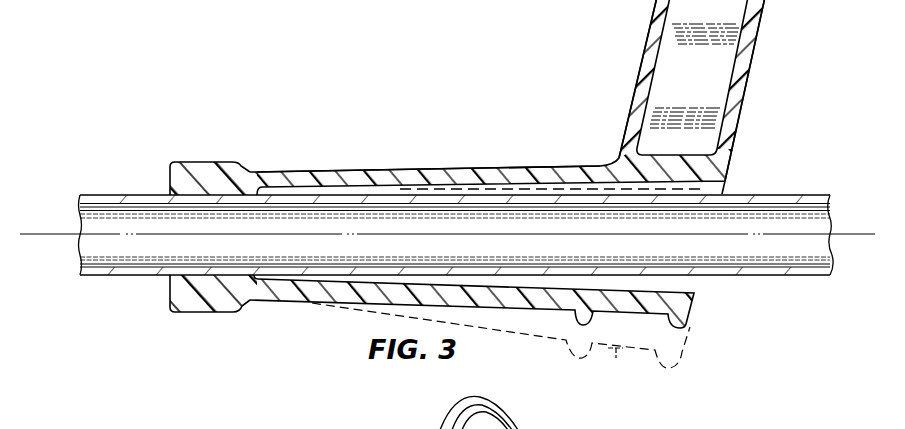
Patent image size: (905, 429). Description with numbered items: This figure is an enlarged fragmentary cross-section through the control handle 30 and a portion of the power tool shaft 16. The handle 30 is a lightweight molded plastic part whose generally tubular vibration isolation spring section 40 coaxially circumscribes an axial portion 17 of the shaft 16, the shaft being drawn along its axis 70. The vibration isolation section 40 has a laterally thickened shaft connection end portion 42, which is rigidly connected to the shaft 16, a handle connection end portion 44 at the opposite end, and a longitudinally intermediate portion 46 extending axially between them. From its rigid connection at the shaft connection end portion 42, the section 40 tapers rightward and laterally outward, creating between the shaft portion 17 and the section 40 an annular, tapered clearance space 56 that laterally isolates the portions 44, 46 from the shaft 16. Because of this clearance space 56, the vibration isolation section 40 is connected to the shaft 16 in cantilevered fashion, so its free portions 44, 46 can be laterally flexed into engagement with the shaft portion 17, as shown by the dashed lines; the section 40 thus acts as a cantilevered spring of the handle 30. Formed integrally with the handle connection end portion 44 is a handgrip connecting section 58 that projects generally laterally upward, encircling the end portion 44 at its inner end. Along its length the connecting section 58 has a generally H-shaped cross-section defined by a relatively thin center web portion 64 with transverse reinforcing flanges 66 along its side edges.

The shaft 16 is at (778, 282).
The axial portion of the shaft 17 is at (428, 264).
The handle 30 is at (515, 108).
The vibration isolation spring section 40 is at (419, 162).
The shaft connection end portion 42 is at (200, 162).
The handle connection end portion 44 is at (614, 322).
The longitudinally intermediate portion 46 is at (473, 166).
The annular tapered clearance space 56 is at (569, 183).
The handgrip connecting section 58 is at (763, 61).
The center web portion 64 is at (666, 46).
The transverse reinforcing flanges 66 is at (648, 62).
The axis of the shaft 70 is at (47, 233).